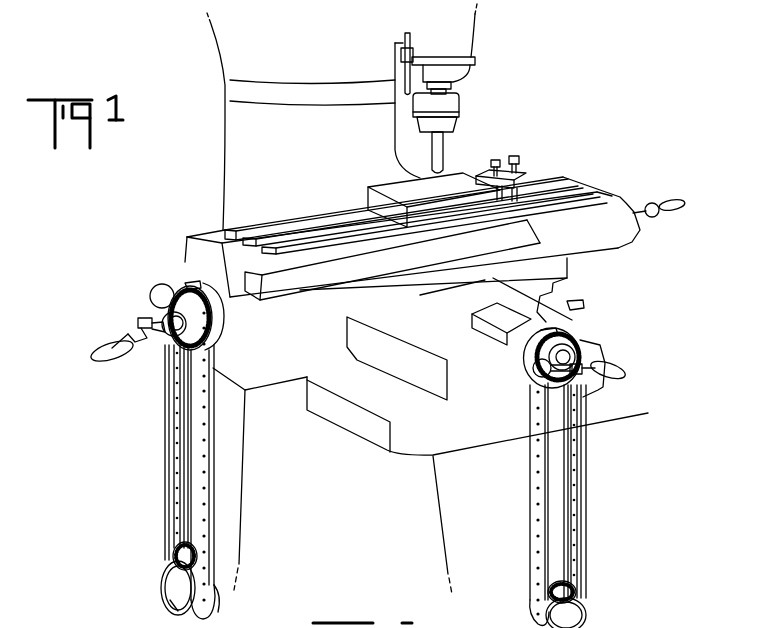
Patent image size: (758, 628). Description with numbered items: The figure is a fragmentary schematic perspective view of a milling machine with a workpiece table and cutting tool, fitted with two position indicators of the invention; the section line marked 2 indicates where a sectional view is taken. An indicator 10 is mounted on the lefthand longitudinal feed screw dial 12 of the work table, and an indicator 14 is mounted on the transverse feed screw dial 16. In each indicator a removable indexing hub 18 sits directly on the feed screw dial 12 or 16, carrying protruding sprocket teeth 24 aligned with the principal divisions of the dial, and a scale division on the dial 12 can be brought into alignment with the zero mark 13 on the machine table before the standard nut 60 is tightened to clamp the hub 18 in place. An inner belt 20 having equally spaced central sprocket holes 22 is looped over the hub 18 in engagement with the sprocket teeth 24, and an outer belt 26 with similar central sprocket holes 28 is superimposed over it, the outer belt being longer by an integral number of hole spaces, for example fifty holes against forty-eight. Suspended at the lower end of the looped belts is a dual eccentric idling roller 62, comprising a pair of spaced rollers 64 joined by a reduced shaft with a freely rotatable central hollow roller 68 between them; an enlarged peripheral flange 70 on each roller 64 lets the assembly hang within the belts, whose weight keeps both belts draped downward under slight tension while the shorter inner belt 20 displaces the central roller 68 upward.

The section line 2 is at (180, 197).
The indicator 10 is at (110, 475).
The longitudinal feed screw dial 12 is at (215, 313).
The zero mark 13 is at (199, 280).
The indicator 14 is at (621, 450).
The transverse feed screw dial 16 is at (524, 357).
The indexing hub 18 is at (163, 352).
The inner belt 20 is at (178, 398).
The sprocket holes 22 is at (180, 439).
The sprocket teeth 24 is at (185, 284).
The outer belt 26 is at (211, 433).
The sprocket holes 28 is at (206, 488).
The nut 60 is at (150, 299).
The dual eccentric idling roller 62 is at (168, 604).
The dual drums or rollers 64 is at (180, 588).
The central hollow roller 68 is at (180, 556).
The peripheral flange 70 is at (213, 607).